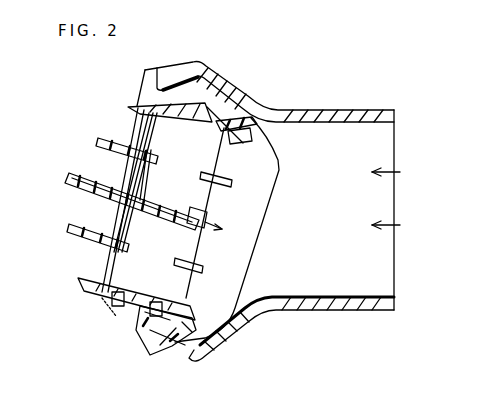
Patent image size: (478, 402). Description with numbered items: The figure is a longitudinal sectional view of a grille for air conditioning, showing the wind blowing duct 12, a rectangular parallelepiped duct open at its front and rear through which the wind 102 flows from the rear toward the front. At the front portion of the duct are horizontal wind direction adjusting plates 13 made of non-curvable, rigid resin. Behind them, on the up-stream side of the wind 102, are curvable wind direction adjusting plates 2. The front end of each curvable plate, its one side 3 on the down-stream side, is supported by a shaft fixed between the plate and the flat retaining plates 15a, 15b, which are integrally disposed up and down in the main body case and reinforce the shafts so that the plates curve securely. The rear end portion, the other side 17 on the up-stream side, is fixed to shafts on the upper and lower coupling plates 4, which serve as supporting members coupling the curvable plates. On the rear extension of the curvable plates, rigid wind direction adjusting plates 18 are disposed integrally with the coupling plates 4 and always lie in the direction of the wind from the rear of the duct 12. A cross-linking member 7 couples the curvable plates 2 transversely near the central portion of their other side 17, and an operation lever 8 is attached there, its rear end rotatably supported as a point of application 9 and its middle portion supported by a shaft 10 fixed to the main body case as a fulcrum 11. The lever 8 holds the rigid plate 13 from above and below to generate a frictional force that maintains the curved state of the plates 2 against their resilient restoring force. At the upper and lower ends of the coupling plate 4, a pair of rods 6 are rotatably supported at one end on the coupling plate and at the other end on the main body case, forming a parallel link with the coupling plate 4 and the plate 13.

The curvable wind direction adjusting plate 2 is at (130, 270).
The one side 3 is at (121, 219).
The coupling plate 4 is at (232, 123).
The rod 6 is at (126, 336).
The cross-linking member 7 is at (221, 229).
The operation lever 8 is at (84, 190).
The point of application 9 is at (204, 218).
The shaft 10 is at (167, 175).
The fulcrum 11 is at (150, 207).
The wind blowing duct 12 is at (328, 111).
The wind direction adjusting plate 13 is at (106, 140).
The retaining plate 15a is at (133, 107).
The retaining plate 15b is at (80, 280).
The other side 17 is at (190, 263).
The wind direction adjusting plate 18 is at (270, 170).
The wind 102 is at (400, 172).